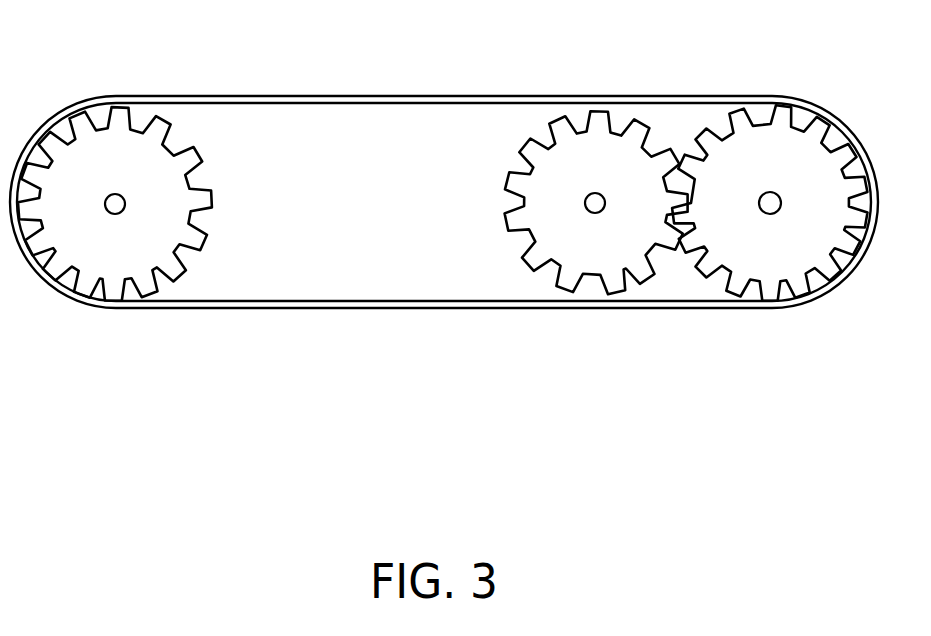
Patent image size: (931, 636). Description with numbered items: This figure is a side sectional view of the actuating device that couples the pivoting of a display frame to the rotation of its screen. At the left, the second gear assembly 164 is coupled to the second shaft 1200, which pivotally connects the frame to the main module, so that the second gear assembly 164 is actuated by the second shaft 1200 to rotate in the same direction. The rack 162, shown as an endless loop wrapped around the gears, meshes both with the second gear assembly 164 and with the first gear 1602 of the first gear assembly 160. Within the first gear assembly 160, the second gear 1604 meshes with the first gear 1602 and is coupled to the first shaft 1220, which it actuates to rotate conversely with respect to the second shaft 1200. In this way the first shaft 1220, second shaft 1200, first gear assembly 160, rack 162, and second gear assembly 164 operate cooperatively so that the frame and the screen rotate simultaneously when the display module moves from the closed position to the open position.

The first gear assembly 160 is at (654, 276).
The rack 162 is at (508, 96).
The second gear assembly 164 is at (157, 241).
The second shaft 1200 is at (125, 203).
The first shaft 1220 is at (586, 204).
The first gear 1602 is at (690, 384).
The second gear 1604 is at (564, 244).